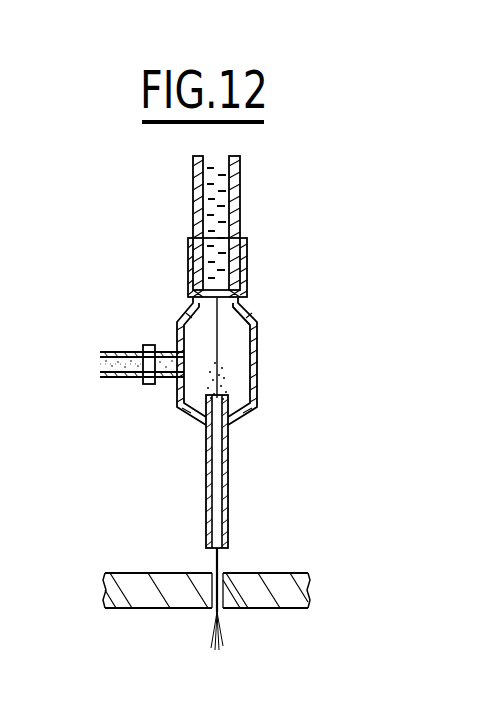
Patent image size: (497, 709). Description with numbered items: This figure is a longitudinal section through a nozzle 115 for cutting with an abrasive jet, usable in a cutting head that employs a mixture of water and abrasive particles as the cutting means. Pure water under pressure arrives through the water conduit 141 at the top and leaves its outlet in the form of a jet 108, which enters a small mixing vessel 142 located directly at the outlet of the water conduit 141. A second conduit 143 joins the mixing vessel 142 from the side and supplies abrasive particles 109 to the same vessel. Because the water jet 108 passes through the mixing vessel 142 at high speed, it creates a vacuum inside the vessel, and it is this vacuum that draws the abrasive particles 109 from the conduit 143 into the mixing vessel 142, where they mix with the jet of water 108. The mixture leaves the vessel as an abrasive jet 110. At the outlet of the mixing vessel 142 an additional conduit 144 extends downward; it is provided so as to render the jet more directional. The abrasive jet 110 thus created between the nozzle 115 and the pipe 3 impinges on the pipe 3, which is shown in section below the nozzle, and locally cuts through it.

The pipe 3 is at (134, 571).
The jet of water 108 is at (184, 318).
The abrasive particles 109 is at (137, 367).
The abrasive jet 110 is at (222, 557).
The nozzle 115 is at (258, 369).
The water conduit 141 is at (207, 232).
The mixing vessel 142 is at (236, 321).
The conduit 143 is at (130, 352).
The additional conduit 144 is at (228, 482).